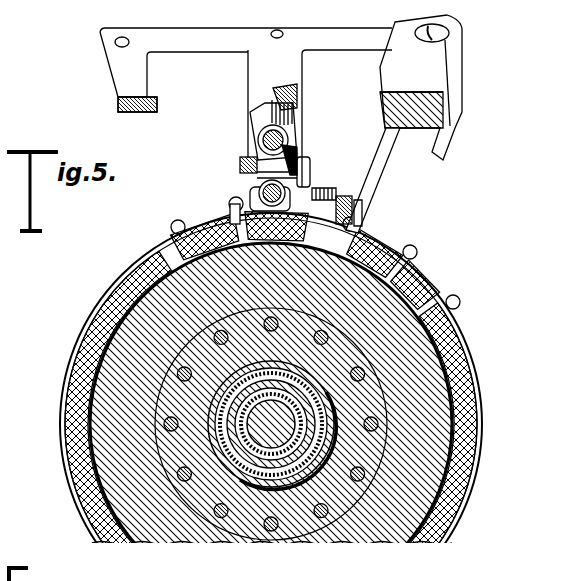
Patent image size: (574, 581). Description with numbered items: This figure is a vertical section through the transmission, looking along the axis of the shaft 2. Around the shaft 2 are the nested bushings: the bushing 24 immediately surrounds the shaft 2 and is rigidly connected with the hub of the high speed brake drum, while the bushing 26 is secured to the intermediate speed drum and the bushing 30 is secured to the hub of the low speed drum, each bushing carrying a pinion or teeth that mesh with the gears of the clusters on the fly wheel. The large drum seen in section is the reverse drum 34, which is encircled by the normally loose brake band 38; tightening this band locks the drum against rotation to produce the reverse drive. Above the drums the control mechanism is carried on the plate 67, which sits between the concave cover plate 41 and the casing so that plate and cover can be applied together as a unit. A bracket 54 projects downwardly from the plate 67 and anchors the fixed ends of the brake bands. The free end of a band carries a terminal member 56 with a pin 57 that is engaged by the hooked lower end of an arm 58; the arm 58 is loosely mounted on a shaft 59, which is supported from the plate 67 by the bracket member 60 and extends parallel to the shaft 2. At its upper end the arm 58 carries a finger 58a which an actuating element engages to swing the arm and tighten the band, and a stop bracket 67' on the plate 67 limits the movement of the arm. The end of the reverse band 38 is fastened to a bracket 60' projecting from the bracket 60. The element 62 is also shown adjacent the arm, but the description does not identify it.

The plate 67 is at (220, 70).
The cover plate 41 is at (430, 62).
The bracket member 60 is at (307, 118).
The wedge 62 is at (300, 105).
The finger 58a is at (262, 122).
The shaft 59 is at (258, 140).
The arm 58 is at (292, 165).
The pin 57 is at (290, 172).
The terminal member 56 is at (222, 216).
The bracket 54 is at (372, 170).
The stop bracket 67' is at (377, 204).
The bracket 60' is at (384, 216).
The brake band 38 is at (463, 337).
The reverse drum 34 is at (420, 373).
The shaft 2 is at (275, 422).
The bushing 24 is at (302, 438).
The bushing 26 is at (312, 455).
The bushing 30 is at (323, 473).